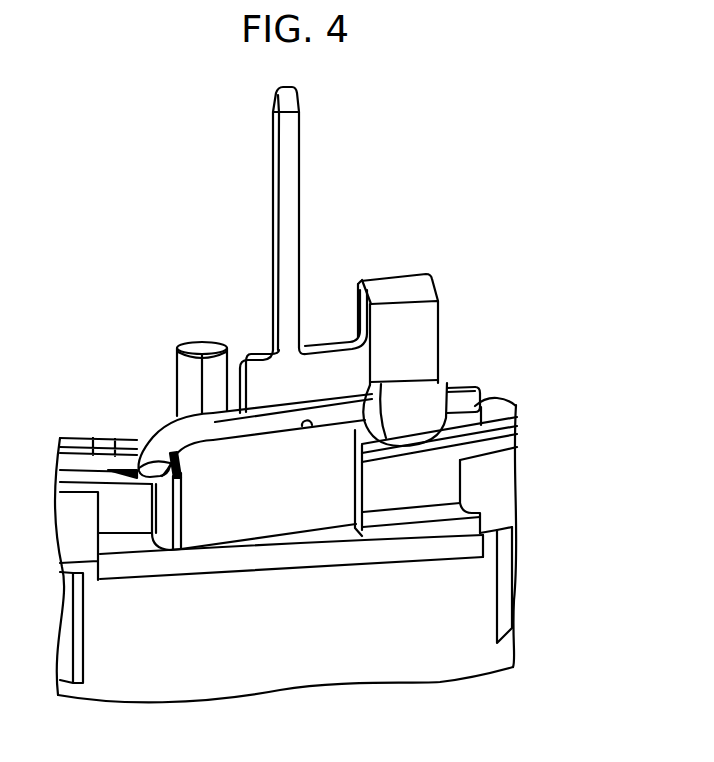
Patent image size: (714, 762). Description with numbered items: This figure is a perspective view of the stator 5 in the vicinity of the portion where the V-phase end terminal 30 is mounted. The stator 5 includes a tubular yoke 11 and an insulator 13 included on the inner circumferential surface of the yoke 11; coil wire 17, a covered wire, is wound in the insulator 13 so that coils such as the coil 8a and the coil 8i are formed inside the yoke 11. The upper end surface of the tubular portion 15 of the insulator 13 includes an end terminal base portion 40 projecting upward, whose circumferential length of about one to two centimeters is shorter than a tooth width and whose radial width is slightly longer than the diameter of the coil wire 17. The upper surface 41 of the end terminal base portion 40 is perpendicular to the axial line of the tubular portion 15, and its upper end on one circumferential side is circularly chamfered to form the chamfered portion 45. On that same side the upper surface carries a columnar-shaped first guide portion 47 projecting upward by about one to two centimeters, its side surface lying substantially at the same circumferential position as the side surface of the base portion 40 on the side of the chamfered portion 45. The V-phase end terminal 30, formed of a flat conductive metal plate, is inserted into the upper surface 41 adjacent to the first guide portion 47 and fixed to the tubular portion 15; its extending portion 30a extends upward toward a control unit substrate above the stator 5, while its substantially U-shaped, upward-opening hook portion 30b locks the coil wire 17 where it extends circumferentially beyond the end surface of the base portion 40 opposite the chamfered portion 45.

The stator 5 is at (485, 221).
The V-phase end terminal 30 is at (249, 237).
The extending portion 30a is at (300, 153).
The hook portion 30b is at (432, 385).
The first guide portion 47 is at (197, 342).
The chamfered portion 45 is at (157, 438).
The upper surface 41 is at (304, 430).
The end terminal base portion 40 is at (271, 508).
The coil wire 17 is at (158, 440).
The coil 8a is at (96, 436).
The coil 8i is at (498, 406).
The tubular portion 15 is at (499, 430).
The insulator 13 is at (493, 485).
The yoke 11 is at (452, 595).